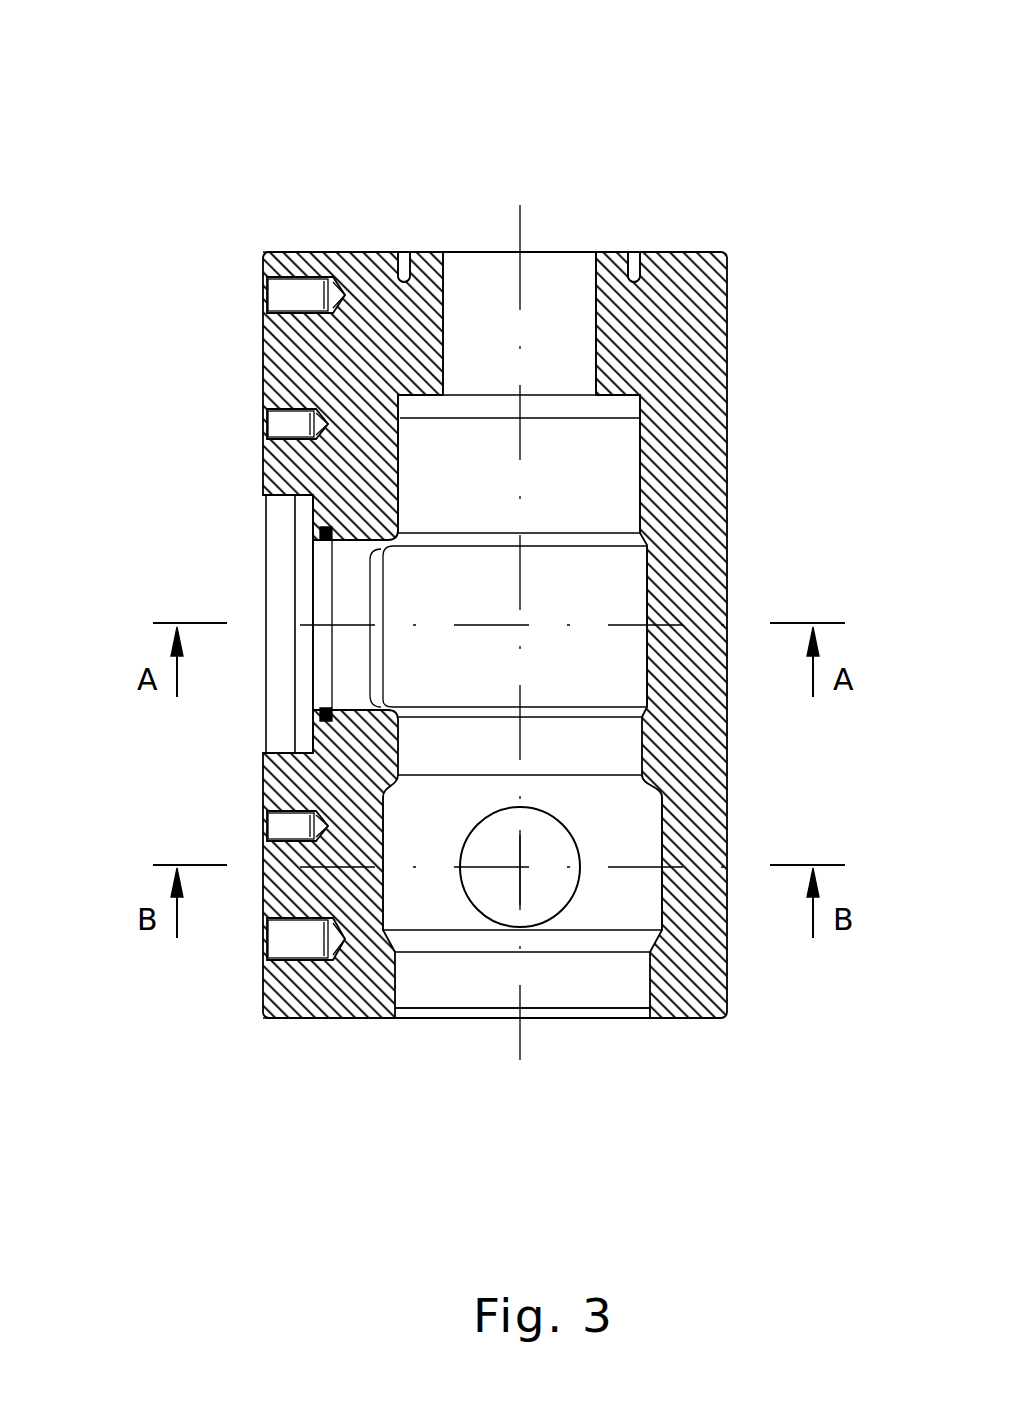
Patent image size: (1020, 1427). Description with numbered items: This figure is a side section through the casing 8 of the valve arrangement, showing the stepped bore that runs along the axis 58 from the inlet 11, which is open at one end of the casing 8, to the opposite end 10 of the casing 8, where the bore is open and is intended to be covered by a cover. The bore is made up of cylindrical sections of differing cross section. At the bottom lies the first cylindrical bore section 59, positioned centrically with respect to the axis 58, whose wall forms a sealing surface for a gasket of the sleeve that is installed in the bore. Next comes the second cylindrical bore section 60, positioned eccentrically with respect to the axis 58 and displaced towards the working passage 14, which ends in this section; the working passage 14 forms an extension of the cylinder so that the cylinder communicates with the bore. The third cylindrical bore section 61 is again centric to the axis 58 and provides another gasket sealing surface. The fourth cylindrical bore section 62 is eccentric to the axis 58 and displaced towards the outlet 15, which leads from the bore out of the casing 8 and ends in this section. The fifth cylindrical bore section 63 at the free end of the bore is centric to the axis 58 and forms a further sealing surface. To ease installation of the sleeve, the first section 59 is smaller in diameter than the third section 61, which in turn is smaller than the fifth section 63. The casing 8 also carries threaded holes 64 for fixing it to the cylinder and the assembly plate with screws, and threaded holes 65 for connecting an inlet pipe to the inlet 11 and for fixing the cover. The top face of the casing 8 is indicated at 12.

The casing 8 is at (700, 355).
The end of the casing 10 is at (313, 1020).
The inlet 11 is at (563, 257).
The top face of housing 12 is at (337, 253).
The working passage 14 is at (355, 597).
The outlet 15 is at (503, 895).
The axis 58 is at (523, 1050).
The first cylindrical bore section 59 is at (615, 462).
The second cylindrical bore section 60 is at (615, 605).
The third cylindrical bore section 61 is at (617, 740).
The fourth cylindrical bore section 62 is at (635, 905).
The fifth cylindrical bore section 63 is at (607, 975).
The threaded holes 64 is at (320, 295).
The threaded holes 65 is at (404, 252).